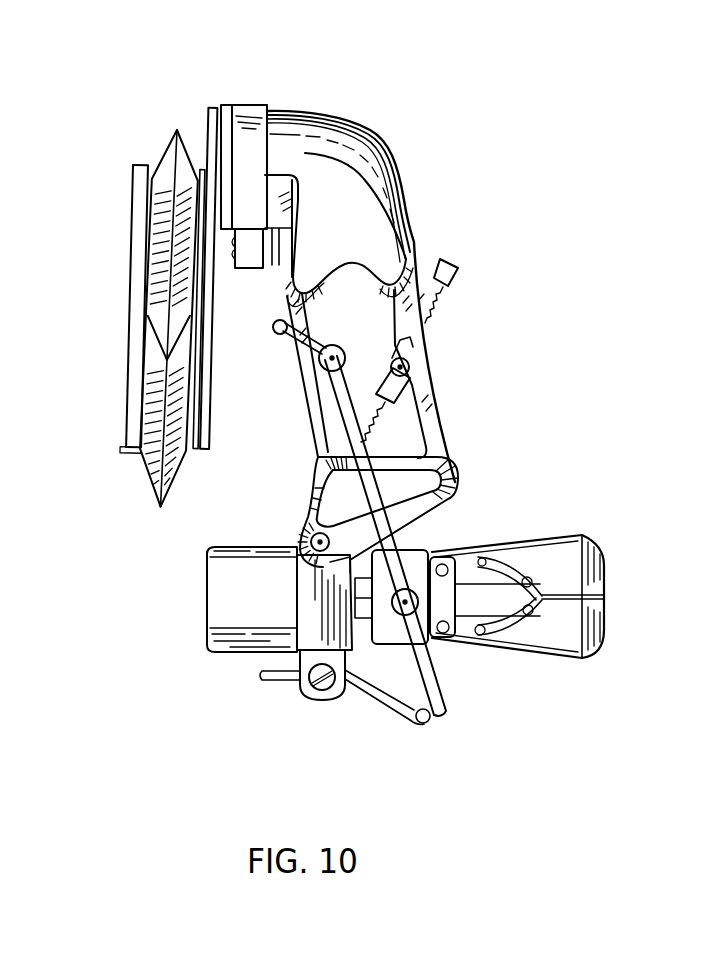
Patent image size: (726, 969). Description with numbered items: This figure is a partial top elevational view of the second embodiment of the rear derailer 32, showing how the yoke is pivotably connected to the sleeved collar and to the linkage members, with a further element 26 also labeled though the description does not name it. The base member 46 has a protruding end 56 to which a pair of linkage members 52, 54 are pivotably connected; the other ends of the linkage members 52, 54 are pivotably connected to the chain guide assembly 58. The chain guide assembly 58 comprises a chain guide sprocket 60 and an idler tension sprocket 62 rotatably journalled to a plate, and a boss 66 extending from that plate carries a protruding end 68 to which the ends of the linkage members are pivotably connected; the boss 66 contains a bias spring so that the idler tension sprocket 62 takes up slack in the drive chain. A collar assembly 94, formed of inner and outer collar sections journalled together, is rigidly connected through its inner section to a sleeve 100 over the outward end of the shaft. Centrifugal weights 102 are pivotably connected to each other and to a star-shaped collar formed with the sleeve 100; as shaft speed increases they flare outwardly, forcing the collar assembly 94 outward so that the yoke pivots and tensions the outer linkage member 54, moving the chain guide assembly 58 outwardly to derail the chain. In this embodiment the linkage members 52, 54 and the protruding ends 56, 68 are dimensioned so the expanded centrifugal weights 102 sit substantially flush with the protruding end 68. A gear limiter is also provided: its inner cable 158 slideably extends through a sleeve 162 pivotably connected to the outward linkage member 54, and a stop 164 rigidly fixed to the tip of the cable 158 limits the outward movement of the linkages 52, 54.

The cutting tool assembly 26 is at (530, 68).
The rear derailer 32 is at (653, 445).
The base member 46 is at (228, 546).
The linkage member 52 is at (313, 427).
The linkage member 54 is at (428, 366).
The protruding end 56 is at (413, 483).
The chain guide assembly 58 is at (323, 88).
The chain guide sprocket 60 is at (157, 222).
The idler tension sprocket 62 is at (158, 420).
The boss 66 is at (357, 153).
The protruding end 68 is at (387, 263).
The collar assembly 94 is at (397, 633).
The sleeve 100 is at (437, 695).
The centrifugal weights 102 is at (595, 550).
The inner cable 158 is at (437, 302).
The sleeve 162 is at (393, 392).
The stop 164 is at (457, 268).